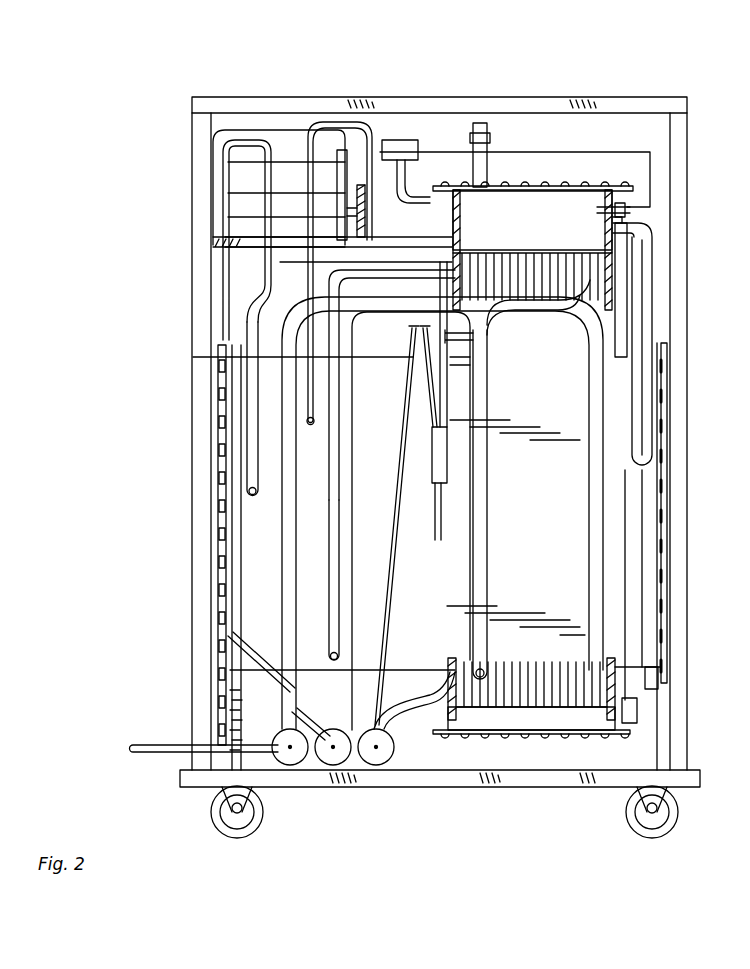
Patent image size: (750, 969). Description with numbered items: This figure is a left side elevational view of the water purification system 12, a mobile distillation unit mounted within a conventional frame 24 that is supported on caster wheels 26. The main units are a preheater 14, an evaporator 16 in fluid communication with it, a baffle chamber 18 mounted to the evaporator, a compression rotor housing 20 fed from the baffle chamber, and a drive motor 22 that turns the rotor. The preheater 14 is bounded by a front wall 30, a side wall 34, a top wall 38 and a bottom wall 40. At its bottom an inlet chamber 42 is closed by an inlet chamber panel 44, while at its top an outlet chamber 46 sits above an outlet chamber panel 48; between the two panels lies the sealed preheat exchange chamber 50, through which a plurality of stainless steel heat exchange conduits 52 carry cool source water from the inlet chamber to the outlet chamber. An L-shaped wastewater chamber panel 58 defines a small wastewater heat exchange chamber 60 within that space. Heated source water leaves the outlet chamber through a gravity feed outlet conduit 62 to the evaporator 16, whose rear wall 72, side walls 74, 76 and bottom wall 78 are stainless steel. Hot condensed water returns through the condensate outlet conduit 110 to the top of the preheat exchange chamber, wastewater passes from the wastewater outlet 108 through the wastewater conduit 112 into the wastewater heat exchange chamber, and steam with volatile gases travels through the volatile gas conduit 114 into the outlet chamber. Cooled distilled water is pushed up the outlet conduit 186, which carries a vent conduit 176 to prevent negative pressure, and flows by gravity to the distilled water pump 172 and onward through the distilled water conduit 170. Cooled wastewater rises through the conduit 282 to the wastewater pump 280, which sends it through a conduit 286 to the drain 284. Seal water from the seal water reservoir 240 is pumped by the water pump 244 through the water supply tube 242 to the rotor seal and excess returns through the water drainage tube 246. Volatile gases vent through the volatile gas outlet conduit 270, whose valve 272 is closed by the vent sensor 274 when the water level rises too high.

The water purification system 12 is at (180, 135).
The preheater 14 is at (582, 492).
The evaporator 16 is at (264, 418).
The baffle chamber 18 is at (630, 323).
The compression rotor housing 20 is at (473, 128).
The drive motor 22 is at (257, 200).
The frame 24 is at (398, 96).
The caster wheels 26 is at (255, 818).
The front wall 30 is at (565, 547).
The side wall 34 is at (660, 345).
The top wall 38 is at (590, 200).
The bottom wall 40 is at (488, 735).
The inlet chamber 42 is at (558, 718).
The inlet chamber panel 44 is at (612, 715).
The outlet chamber 46 is at (538, 213).
The outlet chamber panel 48 is at (582, 260).
The preheat exchange chamber 50 is at (583, 670).
The heat exchange conduits 52 is at (605, 275).
The wastewater chamber panel 58 is at (515, 275).
The wastewater heat exchange chamber 60 is at (393, 746).
The gravity feed outlet conduit 62 is at (645, 282).
The rear wall 72 is at (248, 592).
The side wall 74 is at (665, 568).
The side wall 76 is at (222, 467).
The bottom wall 78 is at (312, 673).
The wastewater outlet 108 is at (255, 502).
The condensate outlet conduit 110 is at (337, 418).
The wastewater conduit 112 is at (253, 346).
The volatile gas conduit 114 is at (338, 122).
The distilled water conduit 170 is at (150, 746).
The distilled water pump 172 is at (298, 765).
The vent conduit 176 is at (280, 157).
The outlet conduit 186 is at (543, 318).
The seal water reservoir 240 is at (432, 467).
The water supply tube 242 is at (405, 345).
The water pump 244 is at (392, 766).
The water drainage tube 246 is at (450, 338).
The volatile gas outlet conduit 270 is at (402, 190).
The valve 272 is at (398, 140).
The vent sensor 274 is at (625, 208).
The wastewater pump 280 is at (352, 766).
The conduit 282 is at (488, 493).
The drain 284 is at (217, 240).
The conduit 286 is at (250, 673).